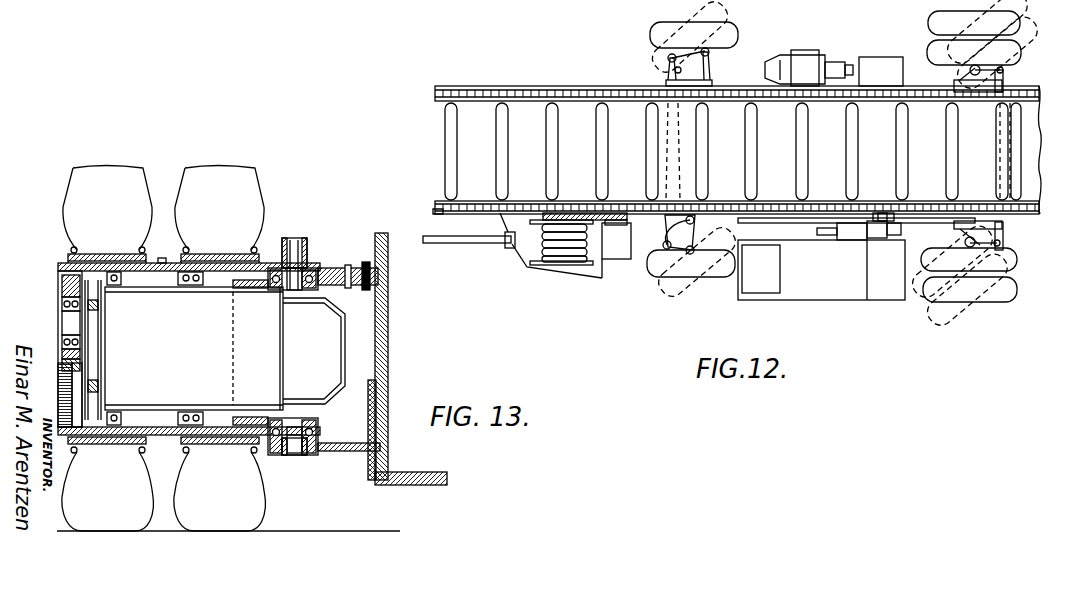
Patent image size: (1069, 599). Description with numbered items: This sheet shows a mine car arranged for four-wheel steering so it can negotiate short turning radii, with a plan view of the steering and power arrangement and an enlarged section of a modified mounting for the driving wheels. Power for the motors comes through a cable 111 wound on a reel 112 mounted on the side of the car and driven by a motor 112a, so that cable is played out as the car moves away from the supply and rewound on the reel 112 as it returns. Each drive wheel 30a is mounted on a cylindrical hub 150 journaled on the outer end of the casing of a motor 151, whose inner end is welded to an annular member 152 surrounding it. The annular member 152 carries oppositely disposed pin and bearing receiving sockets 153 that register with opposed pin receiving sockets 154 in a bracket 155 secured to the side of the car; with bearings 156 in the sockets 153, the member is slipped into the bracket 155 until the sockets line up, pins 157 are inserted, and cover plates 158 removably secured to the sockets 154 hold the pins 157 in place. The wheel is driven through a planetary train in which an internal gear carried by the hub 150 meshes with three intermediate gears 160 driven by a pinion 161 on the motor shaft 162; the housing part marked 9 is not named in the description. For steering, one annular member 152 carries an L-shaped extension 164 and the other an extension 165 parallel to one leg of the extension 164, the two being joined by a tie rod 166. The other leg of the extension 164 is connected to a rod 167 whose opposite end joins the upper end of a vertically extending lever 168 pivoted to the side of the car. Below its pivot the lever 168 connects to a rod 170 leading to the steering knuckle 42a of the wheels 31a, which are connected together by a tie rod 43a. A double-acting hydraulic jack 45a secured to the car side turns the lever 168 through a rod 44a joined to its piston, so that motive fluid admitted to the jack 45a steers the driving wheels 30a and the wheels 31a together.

In FIG. 13, the drive wheels 30a is at (203, 172).
In FIG. 12, the drive wheels 30a is at (930, 23).
In FIG. 12, the wheels 31a is at (738, 34).
In FIG. 12, the tie rod 43a is at (668, 81).
In FIG. 12, the extension 165 is at (955, 83).
In FIG. 12, the cable 111 is at (466, 244).
In FIG. 12, the reel 112 is at (541, 266).
In FIG. 12, the motor 112a is at (616, 256).
In FIG. 12, the steering knuckle 42a is at (668, 248).
In FIG. 12, the rod 170 is at (796, 223).
In FIG. 12, the hydraulic jack 45a is at (836, 240).
In FIG. 12, the rod 44a is at (877, 239).
In FIG. 12, the rod 167 is at (896, 237).
In FIG. 12, the lever 168 is at (885, 214).
In FIG. 12, the tie rod 166 is at (1004, 232).
In FIG. 12, the L-shaped extension 164 is at (1001, 247).
In FIG. 13, the cylindrical hub 150 is at (62, 266).
In FIG. 13, the housing 9 is at (57, 286).
In FIG. 13, the intermediate gears 160 is at (62, 291).
In FIG. 13, the pinion 161 is at (78, 348).
In FIG. 13, the motor shaft 162 is at (78, 360).
In FIG. 13, the motor 151 is at (193, 363).
In FIG. 13, the annular member 152 is at (238, 284).
In FIG. 13, the pin and bearing receiving sockets 153 is at (284, 288).
In FIG. 13, the pin receiving sockets 154 is at (306, 262).
In FIG. 13, the bearings 156 is at (320, 270).
In FIG. 13, the pins 157 is at (291, 402).
In FIG. 13, the cover plates 158 is at (300, 248).
In FIG. 13, the bracket 155 is at (314, 452).